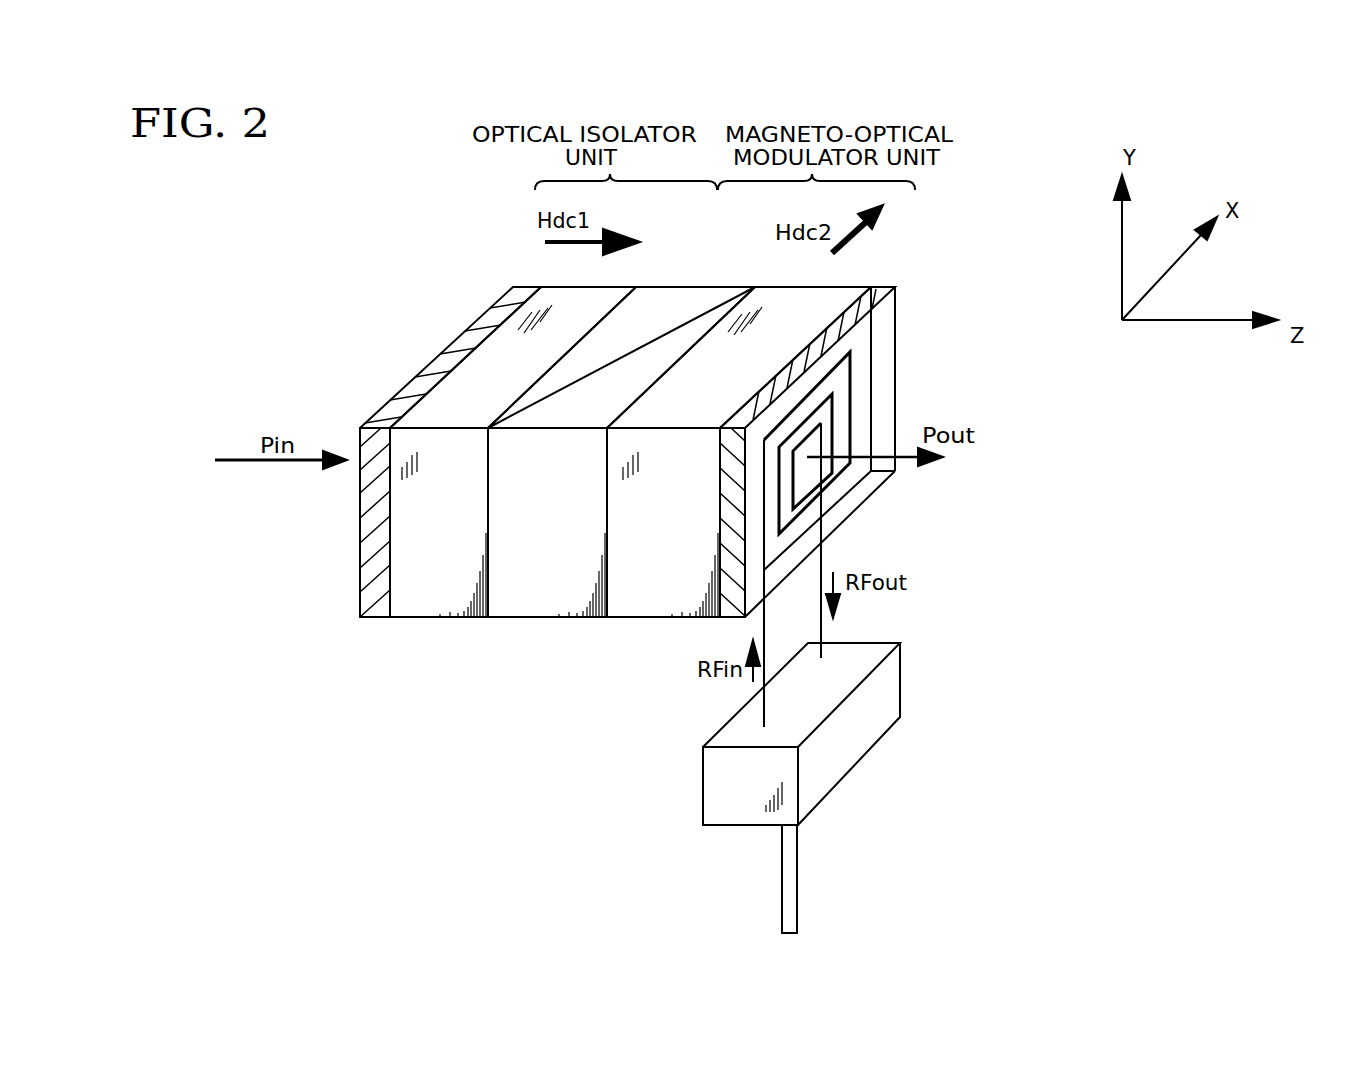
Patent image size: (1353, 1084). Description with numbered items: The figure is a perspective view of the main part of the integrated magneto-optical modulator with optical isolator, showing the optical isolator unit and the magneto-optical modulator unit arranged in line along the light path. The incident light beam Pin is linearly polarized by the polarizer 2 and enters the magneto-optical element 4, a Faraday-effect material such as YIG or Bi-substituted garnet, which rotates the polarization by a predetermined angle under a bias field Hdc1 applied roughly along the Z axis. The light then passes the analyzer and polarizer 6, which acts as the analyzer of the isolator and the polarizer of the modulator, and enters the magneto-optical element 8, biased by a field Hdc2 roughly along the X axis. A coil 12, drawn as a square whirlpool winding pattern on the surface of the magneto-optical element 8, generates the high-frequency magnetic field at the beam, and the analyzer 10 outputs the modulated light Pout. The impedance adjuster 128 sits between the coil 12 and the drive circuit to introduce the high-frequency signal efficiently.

The polarizer 2 is at (362, 590).
The magneto-optical element 4 is at (472, 617).
The analyzer and polarizer 6 is at (580, 615).
The magneto-optical element 8 is at (653, 615).
The analyzer 10 is at (858, 497).
The coil 12 is at (850, 379).
The impedance adjuster 128 is at (863, 720).